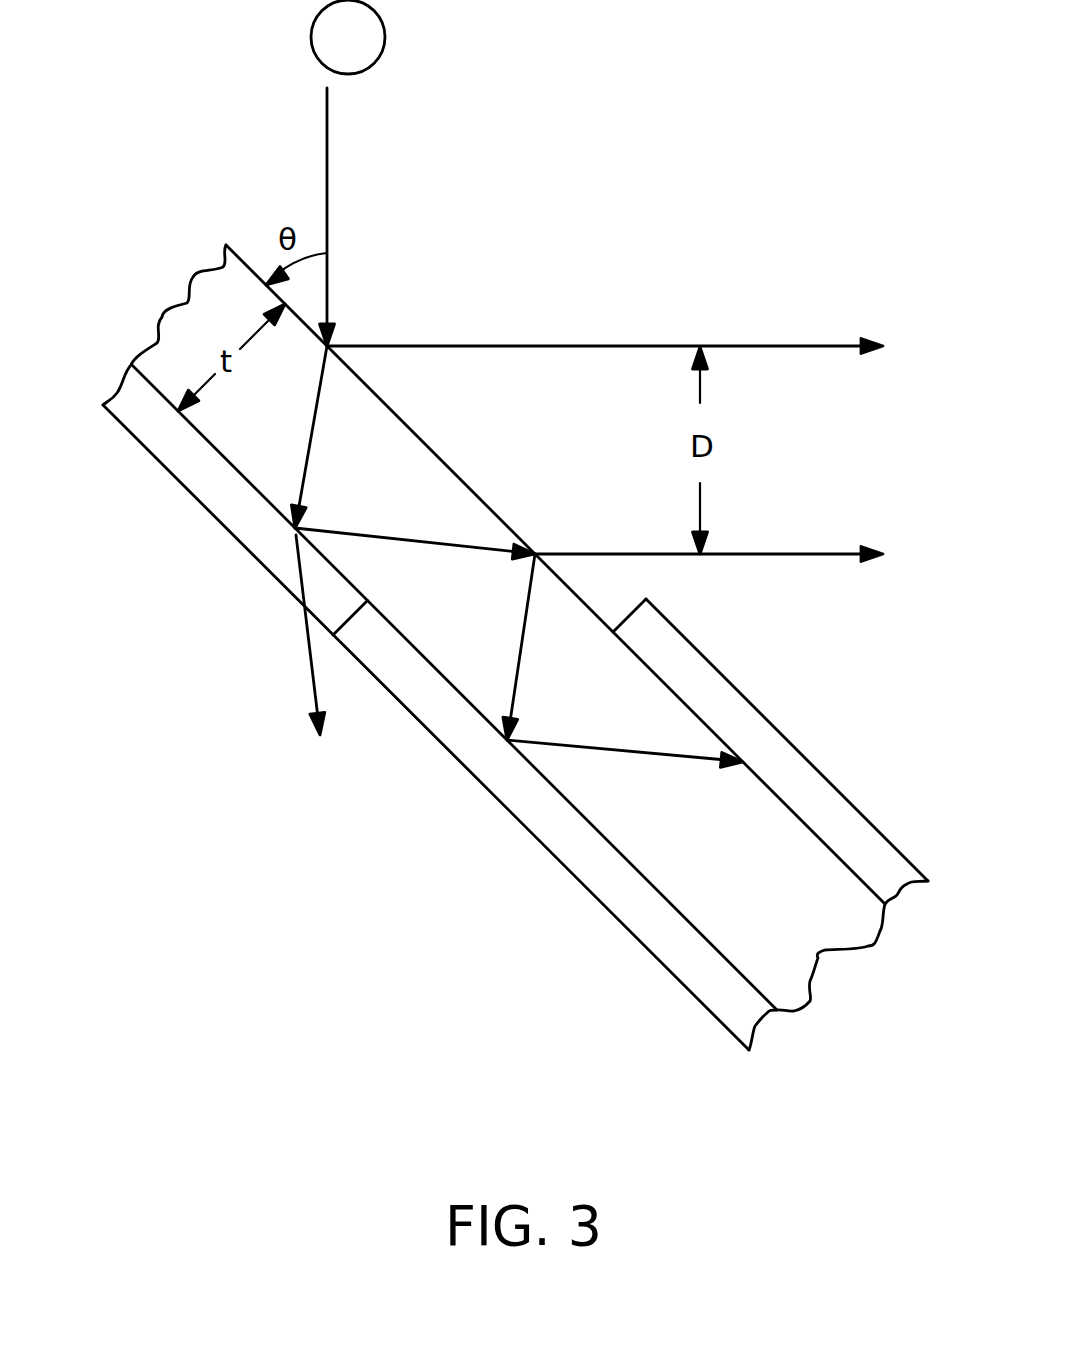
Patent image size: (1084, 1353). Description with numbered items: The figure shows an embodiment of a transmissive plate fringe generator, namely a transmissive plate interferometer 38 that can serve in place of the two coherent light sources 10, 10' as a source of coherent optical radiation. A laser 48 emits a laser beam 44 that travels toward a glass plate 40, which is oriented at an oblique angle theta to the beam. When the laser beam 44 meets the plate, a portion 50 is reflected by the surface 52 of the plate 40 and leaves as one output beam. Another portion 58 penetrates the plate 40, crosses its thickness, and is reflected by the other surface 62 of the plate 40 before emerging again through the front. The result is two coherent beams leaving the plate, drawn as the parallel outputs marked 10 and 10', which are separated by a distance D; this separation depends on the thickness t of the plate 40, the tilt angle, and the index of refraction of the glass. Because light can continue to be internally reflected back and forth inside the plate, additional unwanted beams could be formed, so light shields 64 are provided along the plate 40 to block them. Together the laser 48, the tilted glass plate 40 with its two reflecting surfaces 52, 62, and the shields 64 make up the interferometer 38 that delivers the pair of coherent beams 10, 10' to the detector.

The coherent light source 10 is at (904, 344).
The coherent light source 10' is at (745, 556).
The transmissive plate interferometer 38 is at (363, 763).
The glass plate 40 is at (763, 891).
The laser beam 44 is at (327, 207).
The laser 48 is at (385, 34).
The reflected portion of laser beam 50 is at (583, 345).
The surface of plate 52 is at (490, 500).
The penetrating portion of laser beam 58 is at (310, 463).
The other surface of plate 62 is at (268, 503).
The light shield 64 is at (741, 710).